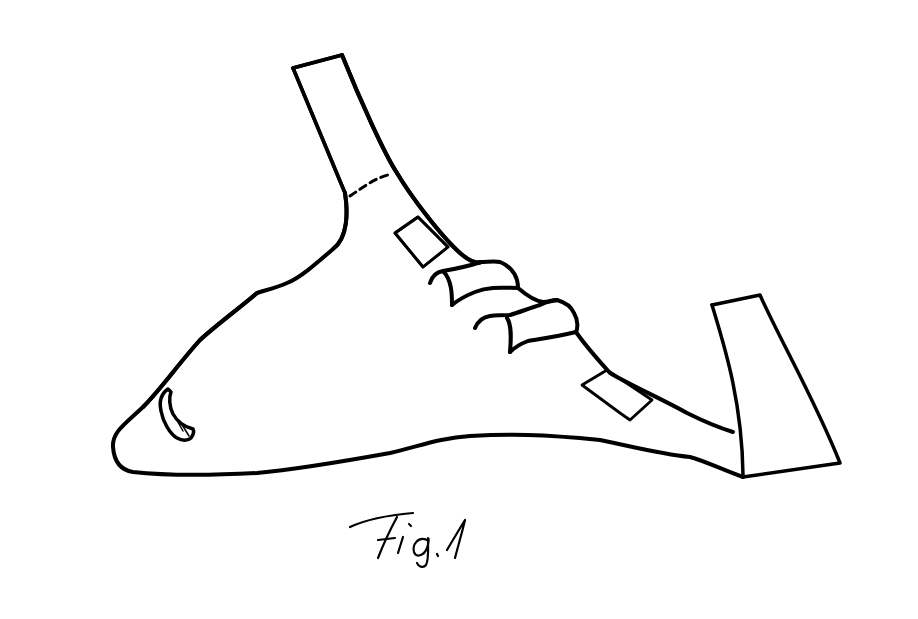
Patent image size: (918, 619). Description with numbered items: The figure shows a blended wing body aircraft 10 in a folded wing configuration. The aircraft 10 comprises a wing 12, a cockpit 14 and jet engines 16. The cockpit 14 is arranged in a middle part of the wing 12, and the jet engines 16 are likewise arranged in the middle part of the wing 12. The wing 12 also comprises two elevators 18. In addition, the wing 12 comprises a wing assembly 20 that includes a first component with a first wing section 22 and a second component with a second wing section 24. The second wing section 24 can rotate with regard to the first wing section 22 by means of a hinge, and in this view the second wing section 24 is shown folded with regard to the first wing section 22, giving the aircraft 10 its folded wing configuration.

The aircraft 10 is at (396, 266).
The wing 12 is at (252, 320).
The cockpit 14 is at (178, 479).
The jet engines 16 is at (531, 275).
The elevators 18 is at (475, 210).
The wing assembly 20 is at (268, 201).
The first wing section 22 is at (522, 323).
The second wing section 24 is at (566, 252).